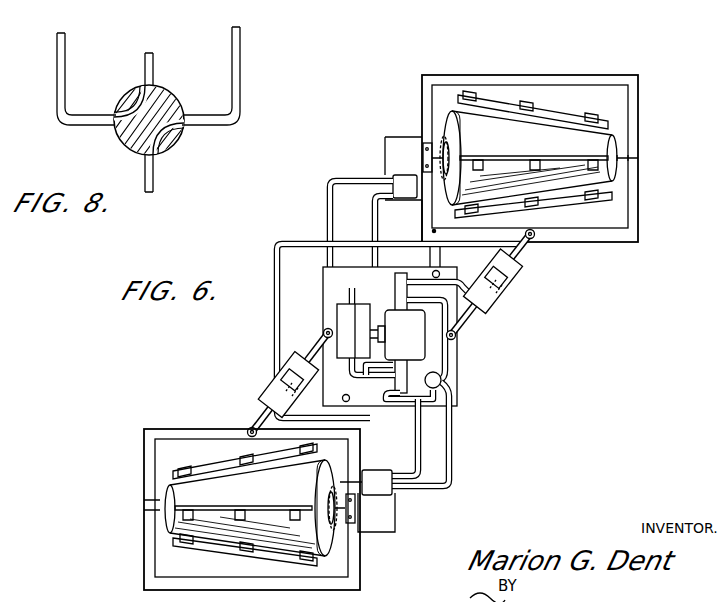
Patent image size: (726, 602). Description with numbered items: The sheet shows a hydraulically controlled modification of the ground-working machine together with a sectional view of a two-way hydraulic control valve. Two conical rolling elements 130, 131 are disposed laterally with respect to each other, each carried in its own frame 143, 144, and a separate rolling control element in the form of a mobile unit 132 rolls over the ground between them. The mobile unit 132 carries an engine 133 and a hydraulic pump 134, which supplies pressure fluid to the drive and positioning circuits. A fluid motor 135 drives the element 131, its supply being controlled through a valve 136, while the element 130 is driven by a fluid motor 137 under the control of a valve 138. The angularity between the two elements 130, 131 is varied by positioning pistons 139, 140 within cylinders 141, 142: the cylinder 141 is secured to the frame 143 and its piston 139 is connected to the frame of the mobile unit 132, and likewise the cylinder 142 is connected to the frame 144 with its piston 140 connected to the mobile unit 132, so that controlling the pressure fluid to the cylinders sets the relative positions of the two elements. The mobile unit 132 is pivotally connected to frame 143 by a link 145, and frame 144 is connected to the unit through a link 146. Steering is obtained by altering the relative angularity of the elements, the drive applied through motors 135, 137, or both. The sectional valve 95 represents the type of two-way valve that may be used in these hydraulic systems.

In FIG. 8, the tubular cross fitting 95 is at (171, 93).
In FIG. 6, the conical rolling element 130 is at (600, 146).
In FIG. 6, the conical rolling element 131 is at (172, 518).
In FIG. 6, the mobile unit 132 is at (450, 350).
In FIG. 6, the engine 133 is at (343, 312).
In FIG. 6, the hydraulic pump 134 is at (448, 366).
In FIG. 6, the fluid motor 135 is at (380, 489).
In FIG. 6, the valve 136 is at (440, 383).
In FIG. 6, the fluid motor 137 is at (393, 180).
In FIG. 6, the valve 138 is at (352, 272).
In FIG. 6, the piston 139 is at (507, 288).
In FIG. 6, the piston 140 is at (276, 382).
In FIG. 6, the cylinder 141 is at (524, 263).
In FIG. 6, the cylinder 142 is at (268, 398).
In FIG. 6, the frame 143 is at (614, 232).
In FIG. 6, the frame 144 is at (160, 430).
In FIG. 6, the link 145 is at (430, 255).
In FIG. 6, the link 146 is at (362, 421).